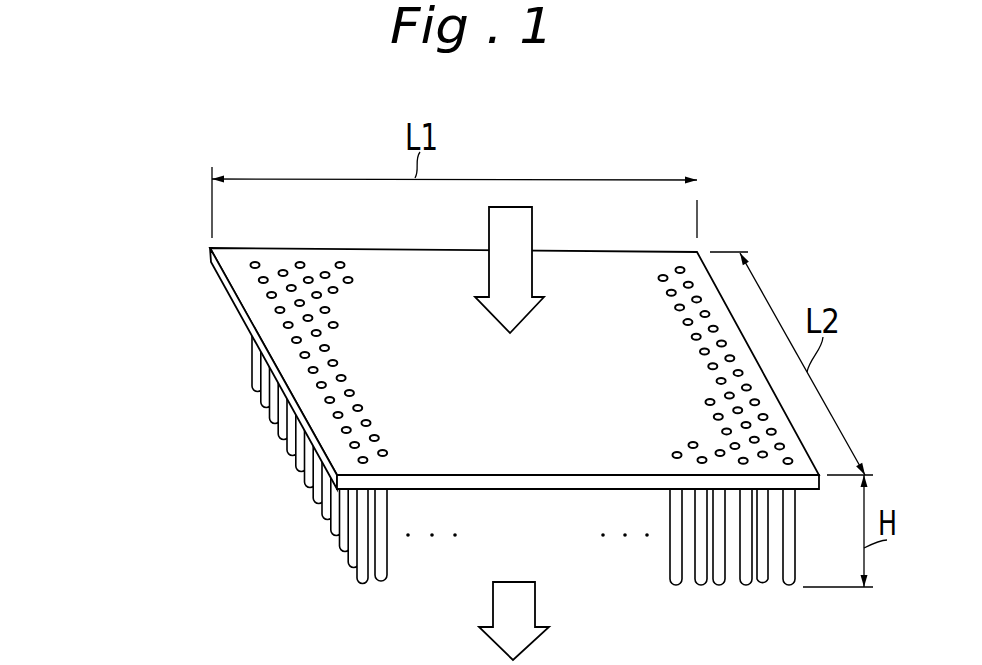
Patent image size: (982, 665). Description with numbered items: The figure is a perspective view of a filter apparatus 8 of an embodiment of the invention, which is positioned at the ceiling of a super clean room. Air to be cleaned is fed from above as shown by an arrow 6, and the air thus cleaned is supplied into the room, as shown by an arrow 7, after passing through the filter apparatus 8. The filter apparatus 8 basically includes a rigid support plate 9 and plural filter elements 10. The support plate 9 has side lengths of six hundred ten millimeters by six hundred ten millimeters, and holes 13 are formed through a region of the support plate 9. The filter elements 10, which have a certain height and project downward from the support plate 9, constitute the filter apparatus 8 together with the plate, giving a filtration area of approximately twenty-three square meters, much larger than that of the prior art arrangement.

The arrow 6 is at (522, 227).
The arrow 7 is at (530, 611).
The filter apparatus 8 is at (432, 417).
The support plate 9 is at (248, 330).
The filter elements 10 is at (275, 437).
The holes 13 is at (338, 326).